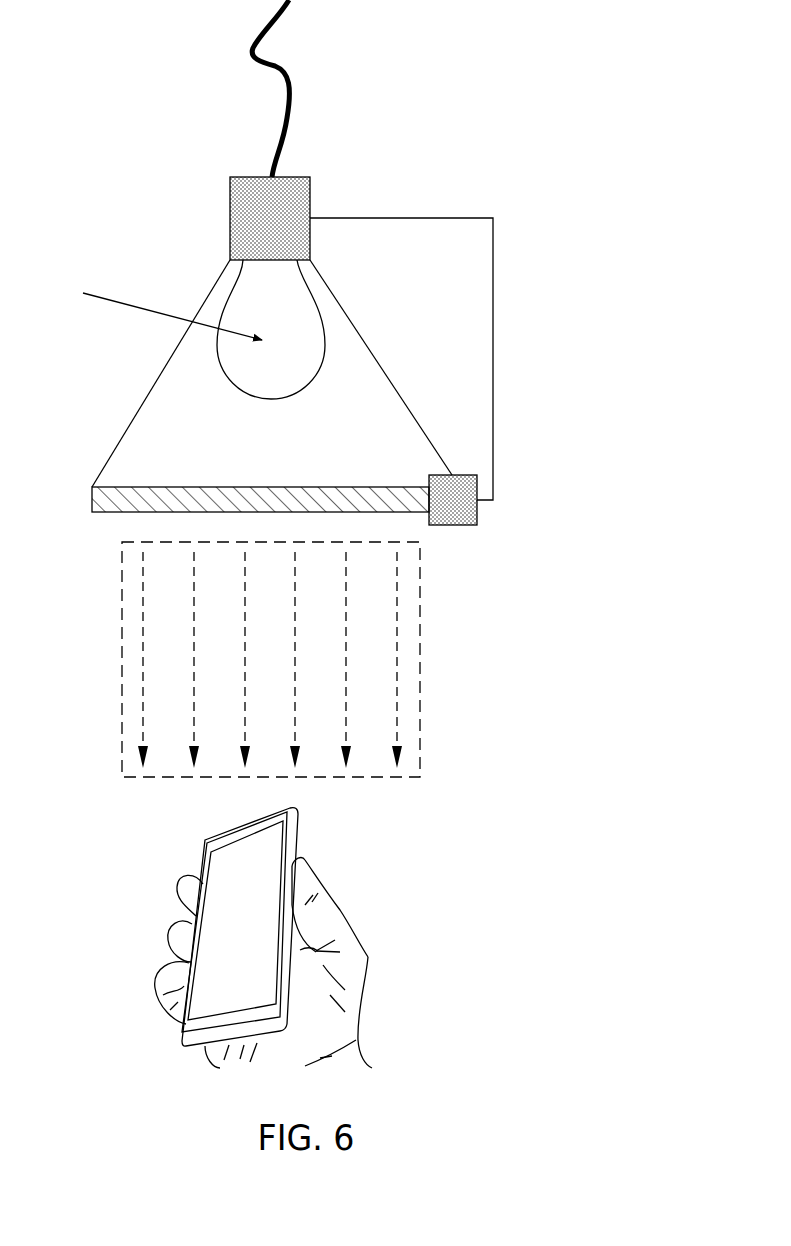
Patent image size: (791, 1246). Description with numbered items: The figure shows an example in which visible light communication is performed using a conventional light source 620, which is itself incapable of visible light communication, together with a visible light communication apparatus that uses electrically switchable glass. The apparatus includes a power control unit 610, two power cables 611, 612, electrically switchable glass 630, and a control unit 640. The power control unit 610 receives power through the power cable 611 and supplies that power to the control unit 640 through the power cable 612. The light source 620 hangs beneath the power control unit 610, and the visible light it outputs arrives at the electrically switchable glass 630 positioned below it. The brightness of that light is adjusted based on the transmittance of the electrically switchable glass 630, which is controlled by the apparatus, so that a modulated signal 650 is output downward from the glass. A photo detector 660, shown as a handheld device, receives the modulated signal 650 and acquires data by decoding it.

The power control unit 610 is at (230, 218).
The power cable 611 is at (248, 53).
The power cable 612 is at (423, 216).
The light source 620 is at (213, 360).
The electrically switchable glass 630 is at (342, 486).
The control unit 640 is at (478, 483).
The modulated signal 650 is at (419, 710).
The photo detector 660 is at (368, 957).